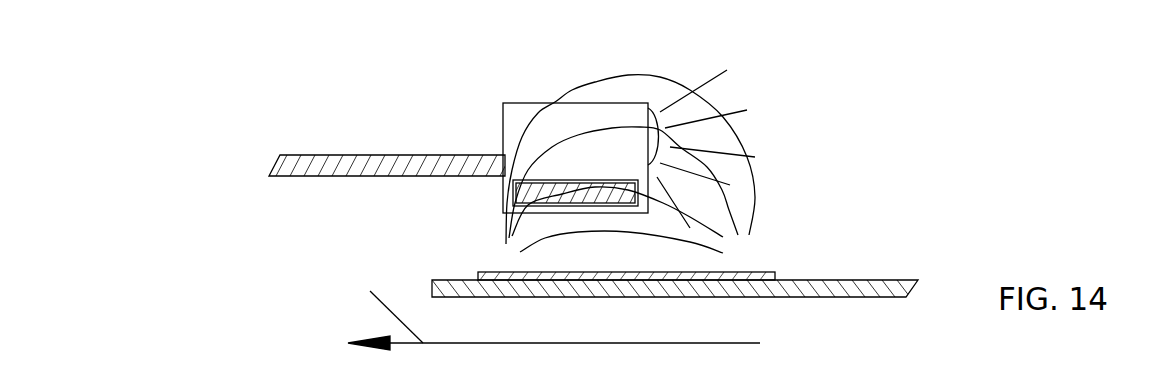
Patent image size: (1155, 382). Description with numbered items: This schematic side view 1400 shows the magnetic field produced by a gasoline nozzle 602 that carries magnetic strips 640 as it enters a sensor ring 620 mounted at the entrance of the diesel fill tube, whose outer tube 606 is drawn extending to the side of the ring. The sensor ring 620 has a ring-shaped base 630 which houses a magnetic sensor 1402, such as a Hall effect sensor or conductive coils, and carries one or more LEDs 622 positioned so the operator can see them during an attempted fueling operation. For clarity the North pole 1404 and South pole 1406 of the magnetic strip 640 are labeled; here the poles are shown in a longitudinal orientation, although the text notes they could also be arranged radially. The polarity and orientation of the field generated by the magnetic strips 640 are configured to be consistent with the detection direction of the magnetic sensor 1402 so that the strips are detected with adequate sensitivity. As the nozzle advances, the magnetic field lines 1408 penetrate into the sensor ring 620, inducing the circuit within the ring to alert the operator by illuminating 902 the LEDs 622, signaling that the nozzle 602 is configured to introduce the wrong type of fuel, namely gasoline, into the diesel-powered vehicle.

The gasoline nozzle 602 is at (903, 288).
The outer tube 606 is at (347, 162).
The sensor ring 620 is at (521, 114).
The LEDs 622 is at (653, 140).
The ring-shaped base 630 is at (527, 102).
The magnetic strips 640 is at (685, 277).
The illuminating 902 is at (715, 78).
The schematic side view 1400 is at (934, 125).
The magnetic sensor 1402 is at (605, 198).
The North pole 1404 is at (443, 245).
The South pole 1406 is at (763, 253).
The magnetic field lines 1408 is at (755, 192).